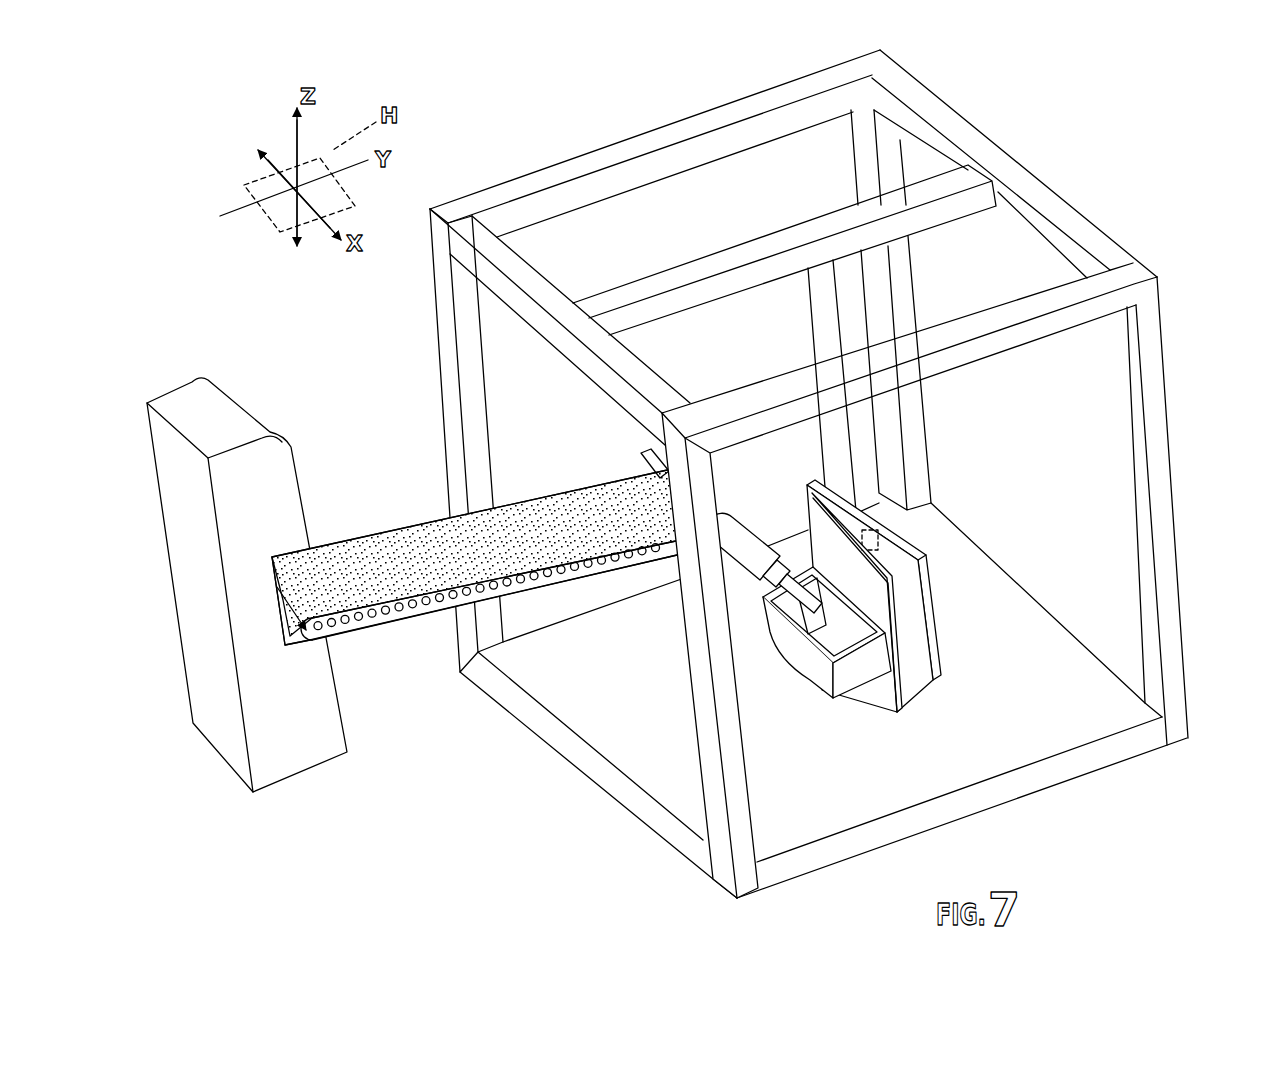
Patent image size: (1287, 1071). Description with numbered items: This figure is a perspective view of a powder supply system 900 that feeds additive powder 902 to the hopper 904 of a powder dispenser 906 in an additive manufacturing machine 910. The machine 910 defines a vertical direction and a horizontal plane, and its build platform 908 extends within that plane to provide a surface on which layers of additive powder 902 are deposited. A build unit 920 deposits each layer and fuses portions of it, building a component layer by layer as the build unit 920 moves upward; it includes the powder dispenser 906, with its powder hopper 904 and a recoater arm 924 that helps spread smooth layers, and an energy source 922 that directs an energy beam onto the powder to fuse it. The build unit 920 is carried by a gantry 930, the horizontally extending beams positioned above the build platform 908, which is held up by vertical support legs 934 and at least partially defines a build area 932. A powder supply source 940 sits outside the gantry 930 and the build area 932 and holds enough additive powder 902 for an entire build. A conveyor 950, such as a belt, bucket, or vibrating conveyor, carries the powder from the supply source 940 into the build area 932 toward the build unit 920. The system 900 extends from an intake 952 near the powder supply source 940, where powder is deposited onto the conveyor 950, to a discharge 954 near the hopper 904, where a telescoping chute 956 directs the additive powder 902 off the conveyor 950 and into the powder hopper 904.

The powder supply system 900 is at (405, 490).
The additive powder 902 is at (390, 585).
The powder hopper 904 is at (858, 690).
The powder dispenser 906 is at (810, 685).
The build platform 908 is at (1120, 722).
The additive manufacturing machine 910 is at (1168, 108).
The build unit 920 is at (952, 650).
The energy source 922 is at (885, 532).
The recoater arm 924 is at (907, 708).
The gantry 930 is at (1092, 238).
The build area 932 is at (1092, 368).
The vertical support legs 934 is at (1163, 490).
The powder supply source 940 is at (277, 524).
The conveyor 950 is at (477, 582).
The intake 952 is at (303, 640).
The discharge 954 is at (648, 470).
The telescoping chute 956 is at (757, 552).